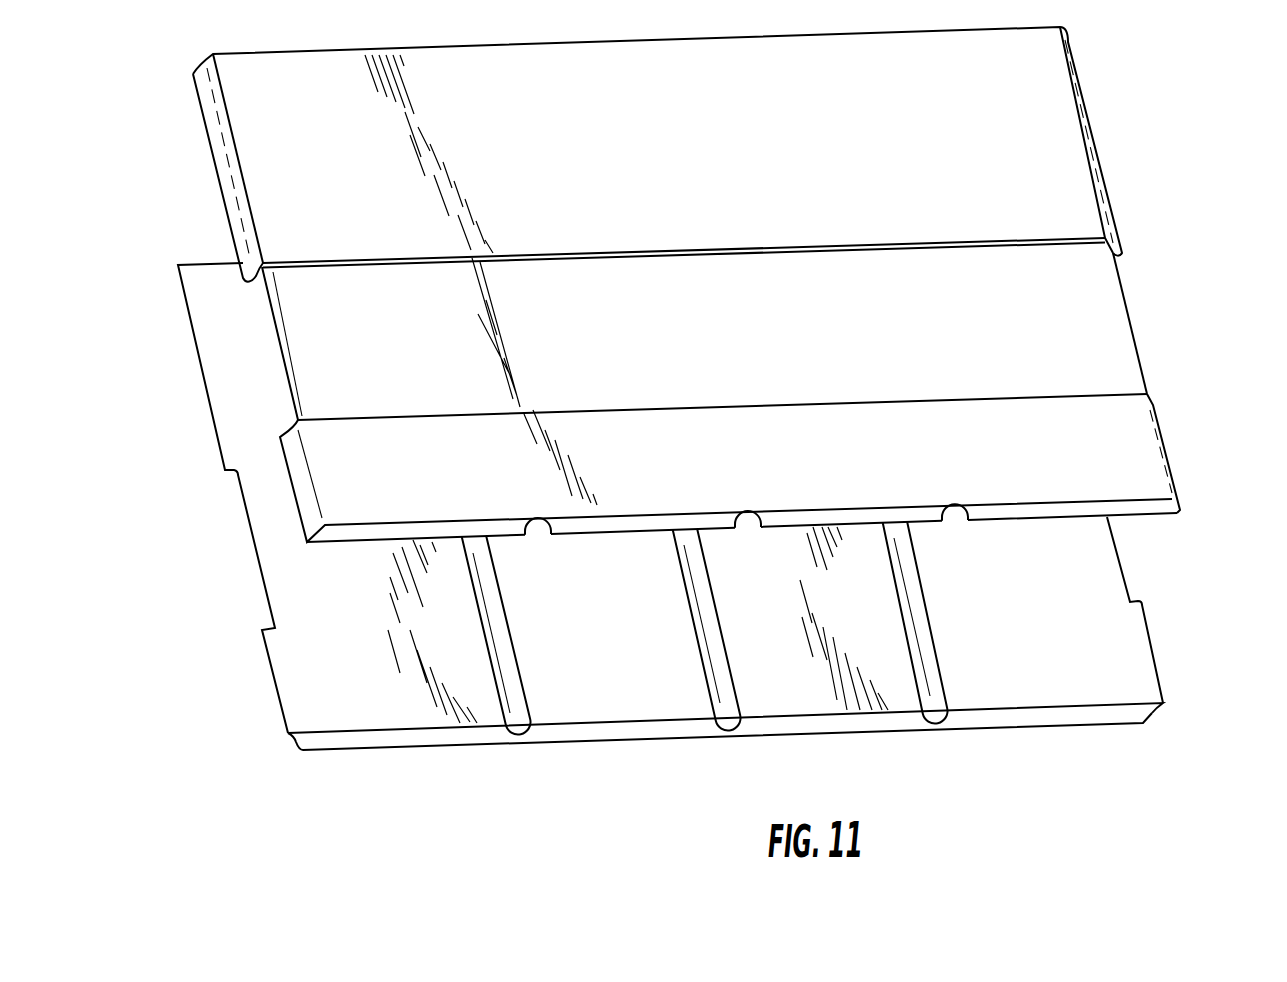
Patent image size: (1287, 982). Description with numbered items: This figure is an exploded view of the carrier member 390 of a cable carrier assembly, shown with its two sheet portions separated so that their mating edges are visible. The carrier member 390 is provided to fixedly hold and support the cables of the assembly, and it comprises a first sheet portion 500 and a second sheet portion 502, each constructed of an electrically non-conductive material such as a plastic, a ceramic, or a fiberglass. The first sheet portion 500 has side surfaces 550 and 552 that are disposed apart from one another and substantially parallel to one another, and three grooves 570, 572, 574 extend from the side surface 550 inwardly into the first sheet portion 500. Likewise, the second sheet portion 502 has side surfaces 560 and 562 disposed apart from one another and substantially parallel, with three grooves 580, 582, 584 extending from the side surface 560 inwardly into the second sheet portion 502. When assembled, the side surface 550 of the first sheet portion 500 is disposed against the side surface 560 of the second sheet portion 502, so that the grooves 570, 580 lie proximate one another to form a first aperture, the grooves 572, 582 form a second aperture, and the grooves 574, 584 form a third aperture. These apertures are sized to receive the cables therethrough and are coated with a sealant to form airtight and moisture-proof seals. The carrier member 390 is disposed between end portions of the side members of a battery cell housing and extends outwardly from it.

The carrier member 390 is at (1116, 198).
The first sheet portion 500 is at (1172, 431).
The second sheet portion 502 is at (1156, 636).
The side surface 550 is at (1152, 517).
The side surface 552 is at (1152, 481).
The side surface 560 is at (1140, 675).
The side surface 562 is at (1140, 727).
The groove 570 is at (540, 537).
The groove 572 is at (750, 532).
The groove 574 is at (960, 524).
The groove 580 is at (519, 736).
The groove 582 is at (728, 731).
The groove 584 is at (937, 726).